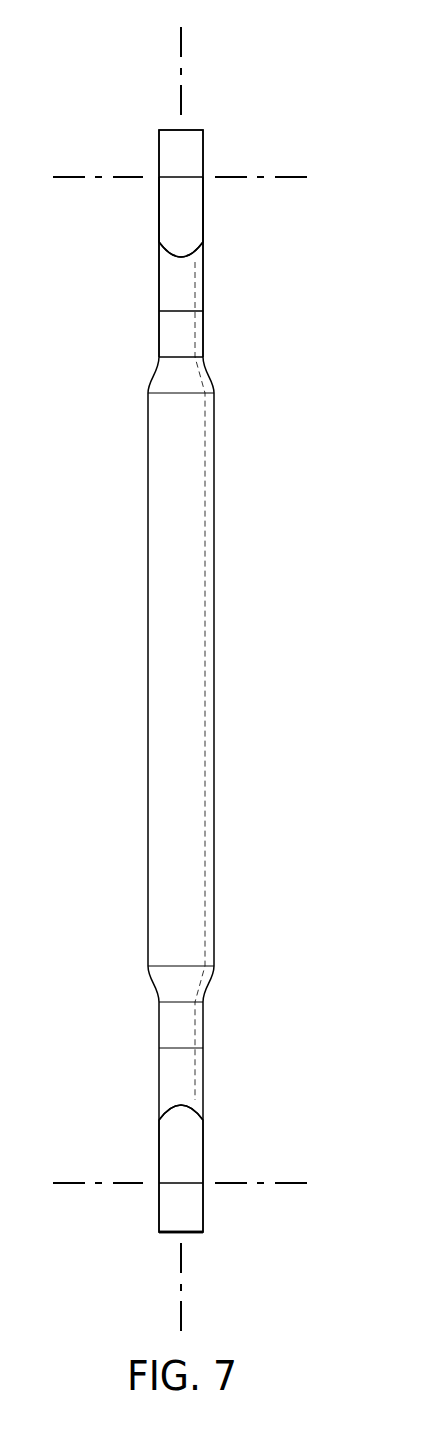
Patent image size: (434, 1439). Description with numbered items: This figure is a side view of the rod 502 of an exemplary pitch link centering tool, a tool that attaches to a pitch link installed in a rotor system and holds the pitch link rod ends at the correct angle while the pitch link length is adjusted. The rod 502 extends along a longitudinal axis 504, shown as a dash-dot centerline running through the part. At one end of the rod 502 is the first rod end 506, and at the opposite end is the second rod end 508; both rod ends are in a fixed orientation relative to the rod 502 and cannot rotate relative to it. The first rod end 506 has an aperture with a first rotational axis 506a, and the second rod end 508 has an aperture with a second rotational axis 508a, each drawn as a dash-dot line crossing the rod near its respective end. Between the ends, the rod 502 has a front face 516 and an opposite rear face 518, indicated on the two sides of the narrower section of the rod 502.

The rod 502 is at (148, 688).
The longitudinal axis 504 is at (183, 43).
The first rod end 506 is at (205, 1208).
The first rotational axis 506a is at (70, 1183).
The second rod end 508 is at (205, 155).
The second rotational axis 508a is at (70, 177).
The front face 516 is at (158, 218).
The rear face 518 is at (205, 227).